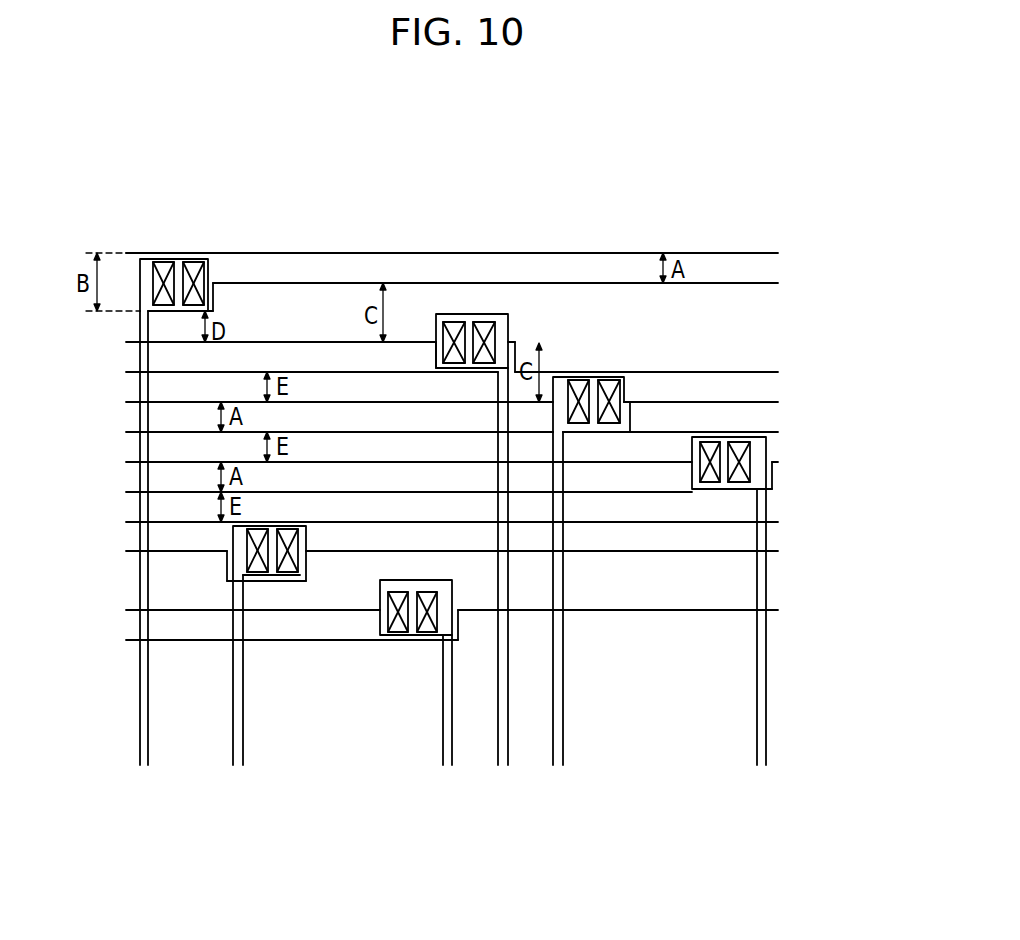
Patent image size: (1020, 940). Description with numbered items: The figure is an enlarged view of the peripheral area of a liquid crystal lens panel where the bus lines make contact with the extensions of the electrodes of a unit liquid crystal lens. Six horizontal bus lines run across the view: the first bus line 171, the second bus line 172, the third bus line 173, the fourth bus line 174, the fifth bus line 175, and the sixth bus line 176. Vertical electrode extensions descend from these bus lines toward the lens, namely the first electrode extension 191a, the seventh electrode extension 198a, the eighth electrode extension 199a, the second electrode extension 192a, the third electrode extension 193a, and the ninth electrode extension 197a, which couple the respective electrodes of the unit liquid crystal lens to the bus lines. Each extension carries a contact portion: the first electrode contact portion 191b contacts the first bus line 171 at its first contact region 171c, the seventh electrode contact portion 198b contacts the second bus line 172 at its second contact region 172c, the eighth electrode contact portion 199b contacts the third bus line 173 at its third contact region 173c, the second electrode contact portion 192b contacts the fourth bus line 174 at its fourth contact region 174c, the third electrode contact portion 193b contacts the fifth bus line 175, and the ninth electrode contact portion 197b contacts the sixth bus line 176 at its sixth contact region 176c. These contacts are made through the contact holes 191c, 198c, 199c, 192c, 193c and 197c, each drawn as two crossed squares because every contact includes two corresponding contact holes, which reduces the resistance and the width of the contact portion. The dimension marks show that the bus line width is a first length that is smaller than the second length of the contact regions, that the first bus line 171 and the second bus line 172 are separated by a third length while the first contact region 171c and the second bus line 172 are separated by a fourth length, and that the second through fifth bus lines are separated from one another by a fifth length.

The first bus line 171 is at (327, 257).
The first contact region 171c is at (216, 300).
The second bus line 172 is at (155, 357).
The second contact region 172c is at (436, 326).
The third bus line 173 is at (155, 417).
The third contact region 173c is at (558, 377).
The fourth bus line 174 is at (155, 477).
The fourth contact region 174c is at (692, 448).
The fifth bus line 175 is at (155, 537).
The sixth bus line 176 is at (160, 624).
The sixth contact region 176c is at (458, 620).
The first electrode extension 191a is at (137, 753).
The first electrode contact portion 191b is at (245, 258).
The contact holes 191c is at (192, 253).
The second electrode extension 192a is at (754, 753).
The second electrode contact portion 192b is at (733, 440).
The contact holes 192c is at (710, 482).
The third electrode extension 193a is at (230, 753).
The third electrode contact portion 193b is at (306, 562).
The contact holes 193c is at (289, 573).
The ninth electrode extension 197a is at (440, 753).
The ninth electrode contact portion 197b is at (380, 620).
The contact holes 197c is at (429, 632).
The seventh electrode extension 198a is at (495, 753).
The seventh electrode contact portion 198b is at (505, 314).
The contact holes 198c is at (484, 320).
The eighth electrode extension 199a is at (550, 753).
The eighth electrode contact portion 199b is at (631, 415).
The contact holes 199c is at (608, 380).